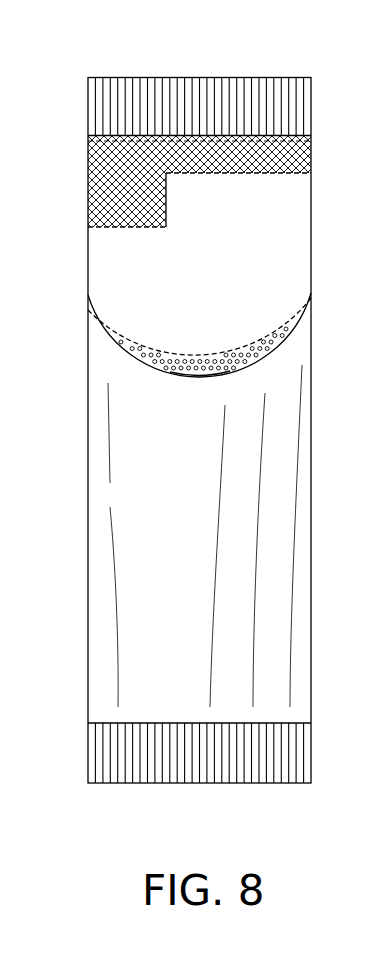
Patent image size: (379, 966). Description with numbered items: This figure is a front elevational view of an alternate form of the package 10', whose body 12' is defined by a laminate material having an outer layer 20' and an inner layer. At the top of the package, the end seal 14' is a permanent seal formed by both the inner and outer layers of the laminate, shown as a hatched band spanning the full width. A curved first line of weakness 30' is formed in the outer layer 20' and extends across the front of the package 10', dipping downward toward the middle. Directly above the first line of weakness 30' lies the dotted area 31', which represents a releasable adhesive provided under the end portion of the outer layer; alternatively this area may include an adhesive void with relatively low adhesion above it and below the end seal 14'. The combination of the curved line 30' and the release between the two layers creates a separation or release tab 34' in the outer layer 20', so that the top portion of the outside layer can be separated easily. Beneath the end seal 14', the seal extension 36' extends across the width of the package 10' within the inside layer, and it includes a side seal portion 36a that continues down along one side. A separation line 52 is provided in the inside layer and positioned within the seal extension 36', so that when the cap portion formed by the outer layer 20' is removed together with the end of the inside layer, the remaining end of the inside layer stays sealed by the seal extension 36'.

The package 10' is at (172, 400).
The end seal 14' is at (208, 76).
The separation line 52 is at (89, 153).
The seal extension 36' is at (233, 162).
The side seal portion 36a is at (122, 187).
The outer layer 20' is at (201, 277).
The first line of weakness 30' is at (163, 335).
The releasable adhesive area 31' is at (225, 352).
The release tab 34' is at (196, 411).
The body 12' is at (167, 574).